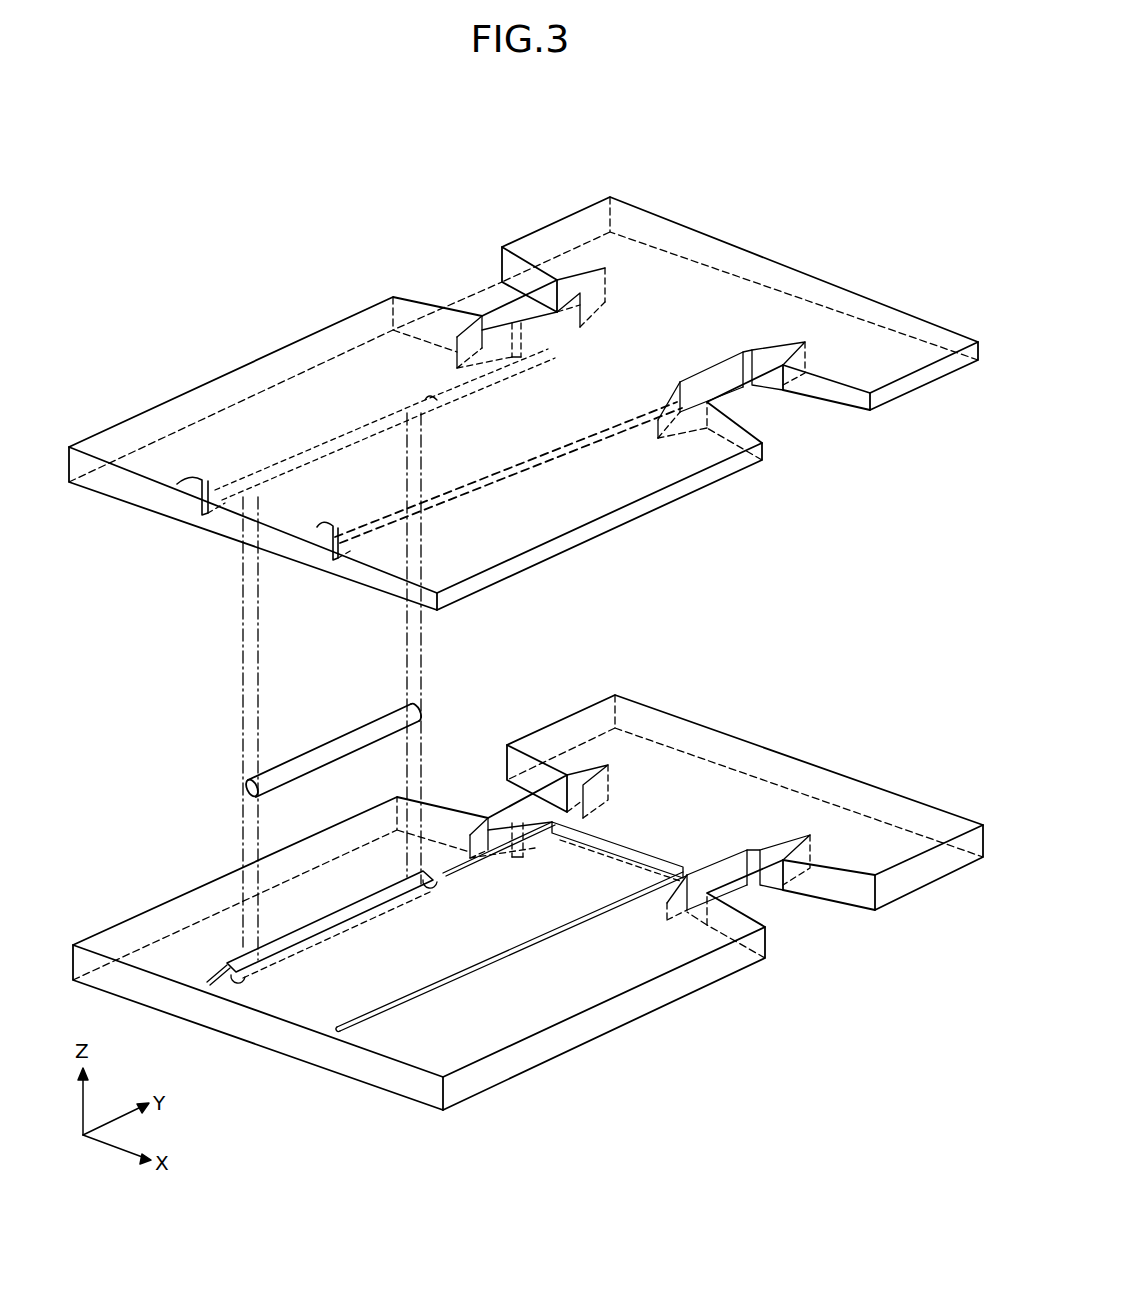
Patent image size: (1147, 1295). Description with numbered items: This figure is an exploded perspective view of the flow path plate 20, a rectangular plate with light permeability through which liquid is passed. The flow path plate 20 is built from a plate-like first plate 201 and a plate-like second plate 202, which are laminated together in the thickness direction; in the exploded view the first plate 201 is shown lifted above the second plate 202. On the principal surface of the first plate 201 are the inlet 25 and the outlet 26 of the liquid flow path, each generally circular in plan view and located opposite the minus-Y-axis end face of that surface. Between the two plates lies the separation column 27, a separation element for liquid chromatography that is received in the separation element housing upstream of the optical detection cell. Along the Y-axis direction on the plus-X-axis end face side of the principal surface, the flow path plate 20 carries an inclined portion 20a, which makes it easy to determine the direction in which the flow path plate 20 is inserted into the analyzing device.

The flow path plate 20 is at (796, 138).
The first plate 201 is at (523, 422).
The second plate 202 is at (604, 1015).
The inclined portion 20a is at (452, 540).
The inlet 25 is at (183, 478).
The outlet 26 is at (323, 522).
The separation column 27 is at (328, 743).